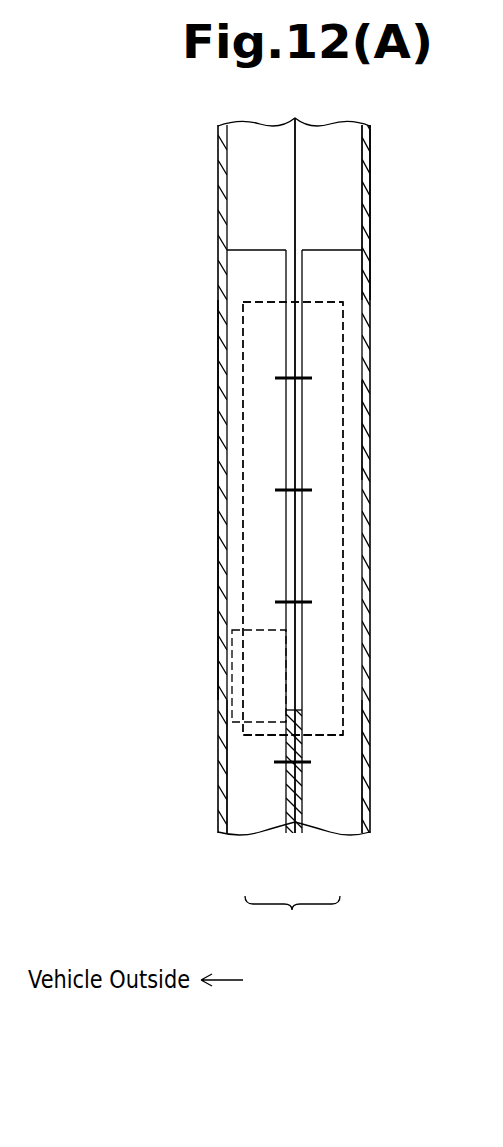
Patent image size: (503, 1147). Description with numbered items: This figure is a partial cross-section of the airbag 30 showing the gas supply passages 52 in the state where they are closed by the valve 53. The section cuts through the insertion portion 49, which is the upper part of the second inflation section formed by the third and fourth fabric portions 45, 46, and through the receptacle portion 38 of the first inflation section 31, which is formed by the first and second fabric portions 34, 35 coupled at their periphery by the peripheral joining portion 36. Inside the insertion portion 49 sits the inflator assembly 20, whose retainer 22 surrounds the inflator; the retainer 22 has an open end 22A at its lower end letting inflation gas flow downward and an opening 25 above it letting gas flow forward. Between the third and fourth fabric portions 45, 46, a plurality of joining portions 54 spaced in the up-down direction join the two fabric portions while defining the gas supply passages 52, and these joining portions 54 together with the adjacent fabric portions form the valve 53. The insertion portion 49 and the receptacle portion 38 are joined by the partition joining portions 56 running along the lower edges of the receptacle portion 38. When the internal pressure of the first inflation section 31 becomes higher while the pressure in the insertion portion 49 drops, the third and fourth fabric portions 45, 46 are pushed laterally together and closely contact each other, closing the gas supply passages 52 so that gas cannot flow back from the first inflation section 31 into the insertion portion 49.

The airbag 30 is at (456, 158).
The valve 53 is at (180, 520).
The third fabric portion 45 is at (256, 257).
The fourth fabric portion 46 is at (326, 257).
The insertion portion 49 is at (354, 272).
The receptacle portion 38 is at (366, 424).
The gas supply passages 52 is at (290, 436).
The peripheral joining portion 36 is at (281, 378).
The joining portions 54 is at (280, 490).
The partition joining portions 56 is at (292, 762).
The inflator assembly 20 is at (345, 545).
The retainer 22 is at (293, 518).
The open end 22A is at (266, 742).
The opening 25 is at (248, 684).
The first fabric portion 34 is at (252, 826).
The second fabric portion 35 is at (330, 826).
The first inflation section 31 is at (292, 921).